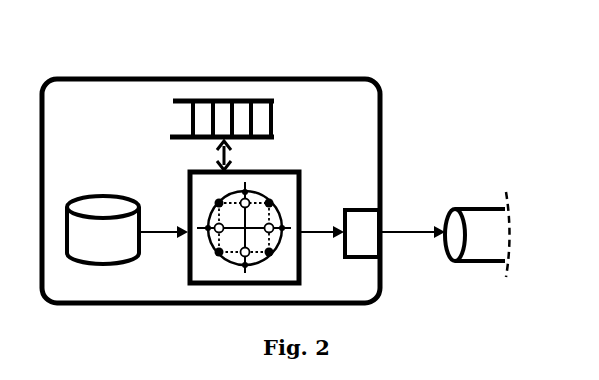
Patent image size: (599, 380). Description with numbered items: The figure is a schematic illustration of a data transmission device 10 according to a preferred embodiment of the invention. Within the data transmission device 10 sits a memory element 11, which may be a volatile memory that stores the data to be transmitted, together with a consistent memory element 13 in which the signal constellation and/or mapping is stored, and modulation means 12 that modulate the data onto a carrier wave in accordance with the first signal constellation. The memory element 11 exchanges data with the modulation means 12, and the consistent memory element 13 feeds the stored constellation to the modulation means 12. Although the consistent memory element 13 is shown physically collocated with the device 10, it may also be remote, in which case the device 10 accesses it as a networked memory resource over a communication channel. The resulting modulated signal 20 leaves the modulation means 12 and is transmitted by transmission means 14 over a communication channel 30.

The data transmission device 10 is at (118, 78).
The memory element 11 is at (275, 130).
The modulation means 12 is at (188, 181).
The consistent memory element 13 is at (72, 263).
The transmission means 14 is at (360, 210).
The modulated signal 20 is at (433, 230).
The communication channel 30 is at (479, 248).